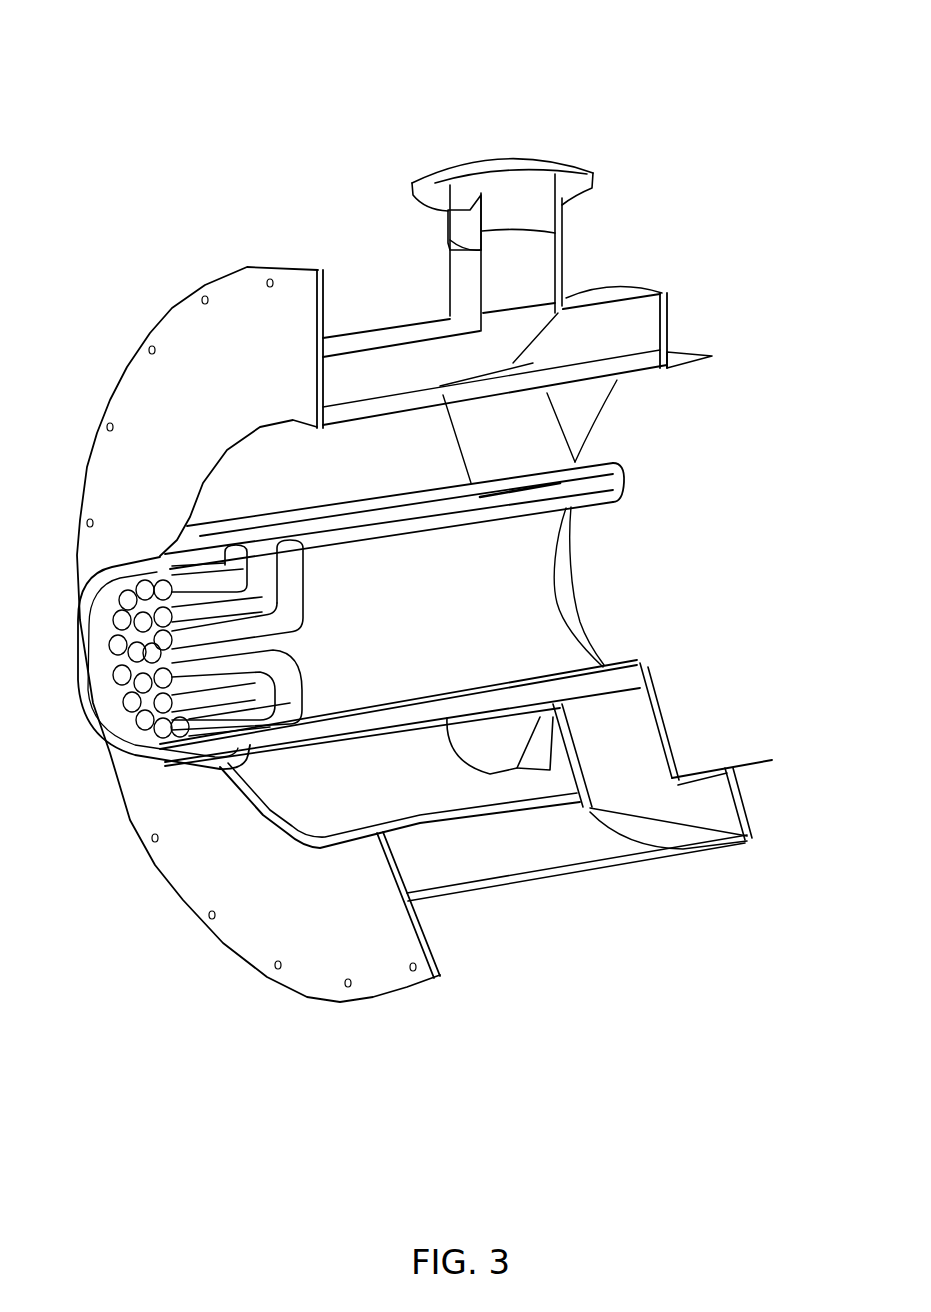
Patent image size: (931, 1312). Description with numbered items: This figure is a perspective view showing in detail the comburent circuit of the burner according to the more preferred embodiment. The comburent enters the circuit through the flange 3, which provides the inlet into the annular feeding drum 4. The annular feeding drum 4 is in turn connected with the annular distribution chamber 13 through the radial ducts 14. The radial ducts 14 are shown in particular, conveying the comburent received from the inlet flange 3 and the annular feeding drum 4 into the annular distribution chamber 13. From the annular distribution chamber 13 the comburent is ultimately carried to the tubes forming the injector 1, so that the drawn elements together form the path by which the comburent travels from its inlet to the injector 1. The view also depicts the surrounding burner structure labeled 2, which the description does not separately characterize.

The injector 1 is at (318, 618).
The shell 2 is at (500, 623).
The flange 3 is at (515, 188).
The annular feeding drum 4 is at (390, 365).
The annular distribution chamber 13 is at (590, 689).
The radial ducts 14 is at (612, 758).